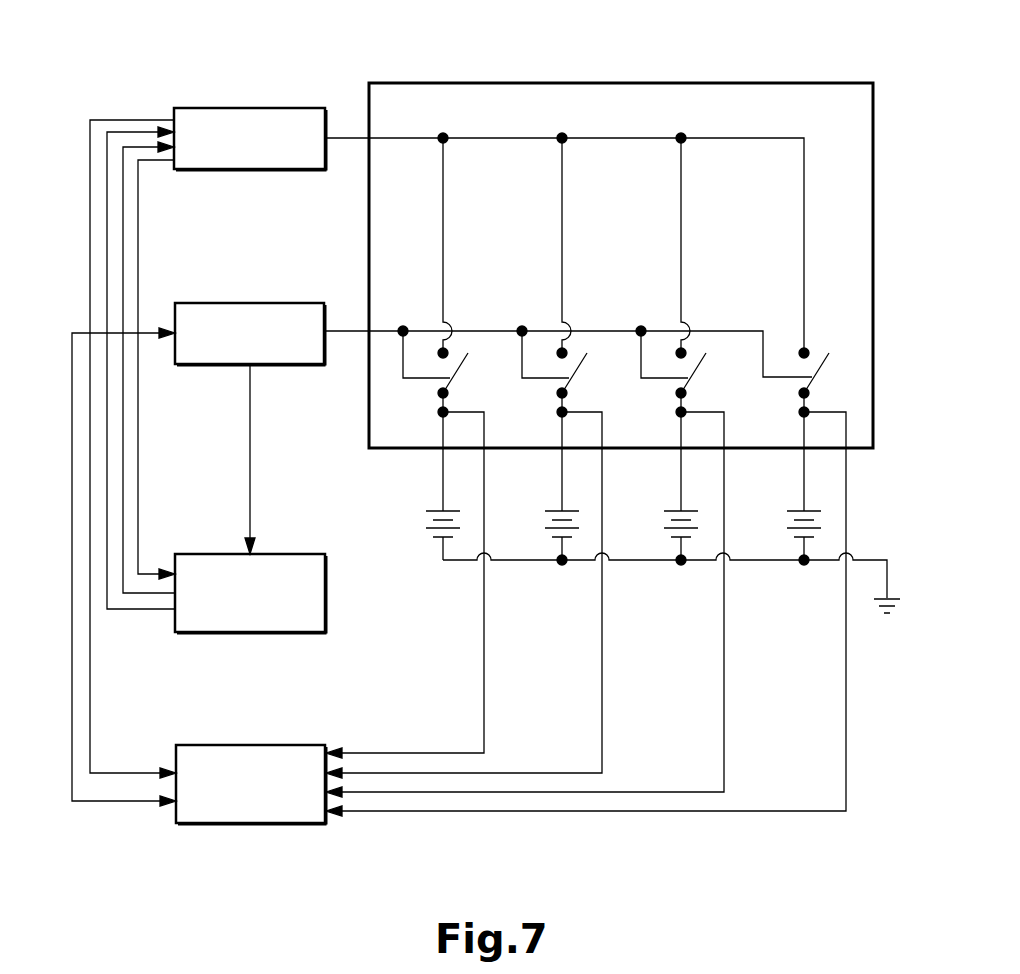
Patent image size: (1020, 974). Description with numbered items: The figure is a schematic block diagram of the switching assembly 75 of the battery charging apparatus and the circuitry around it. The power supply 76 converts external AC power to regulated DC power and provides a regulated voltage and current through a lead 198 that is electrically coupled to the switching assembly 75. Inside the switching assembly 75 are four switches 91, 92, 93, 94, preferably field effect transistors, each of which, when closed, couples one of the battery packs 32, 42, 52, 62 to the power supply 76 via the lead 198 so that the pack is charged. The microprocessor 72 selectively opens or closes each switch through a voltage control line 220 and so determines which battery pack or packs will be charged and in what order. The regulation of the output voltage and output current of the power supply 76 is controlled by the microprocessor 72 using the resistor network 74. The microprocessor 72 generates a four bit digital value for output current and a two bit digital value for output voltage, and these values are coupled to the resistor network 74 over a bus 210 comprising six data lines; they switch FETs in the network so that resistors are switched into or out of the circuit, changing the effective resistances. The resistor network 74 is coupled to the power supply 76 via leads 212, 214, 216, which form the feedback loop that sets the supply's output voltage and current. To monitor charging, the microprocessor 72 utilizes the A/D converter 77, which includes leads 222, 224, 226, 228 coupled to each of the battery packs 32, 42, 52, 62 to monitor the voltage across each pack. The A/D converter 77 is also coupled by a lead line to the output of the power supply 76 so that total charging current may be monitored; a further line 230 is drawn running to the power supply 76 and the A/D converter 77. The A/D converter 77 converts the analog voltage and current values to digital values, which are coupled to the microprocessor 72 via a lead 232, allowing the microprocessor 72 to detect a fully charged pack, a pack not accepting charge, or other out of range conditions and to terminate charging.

The switching assembly 75 is at (665, 83).
The power supply 76 is at (298, 108).
The microprocessor 72 is at (300, 303).
The resistor network 74 is at (292, 554).
The A/D converter 77 is at (295, 758).
The lead 198 is at (337, 138).
The voltage control line 220 is at (384, 327).
The switch 91 is at (466, 333).
The switch 92 is at (585, 333).
The switch 93 is at (707, 336).
The switch 94 is at (824, 334).
The battery pack 32 is at (418, 538).
The battery pack 42 is at (537, 531).
The battery pack 52 is at (656, 533).
The battery pack 62 is at (781, 533).
The lead 222 is at (484, 698).
The lead 224 is at (602, 717).
The lead 226 is at (724, 720).
The lead 228 is at (846, 742).
The power supply line 230 is at (90, 163).
The lead 232 is at (83, 805).
The lead 212 is at (138, 203).
The lead 214 is at (123, 395).
The lead 216 is at (107, 428).
The bus 210 is at (250, 443).